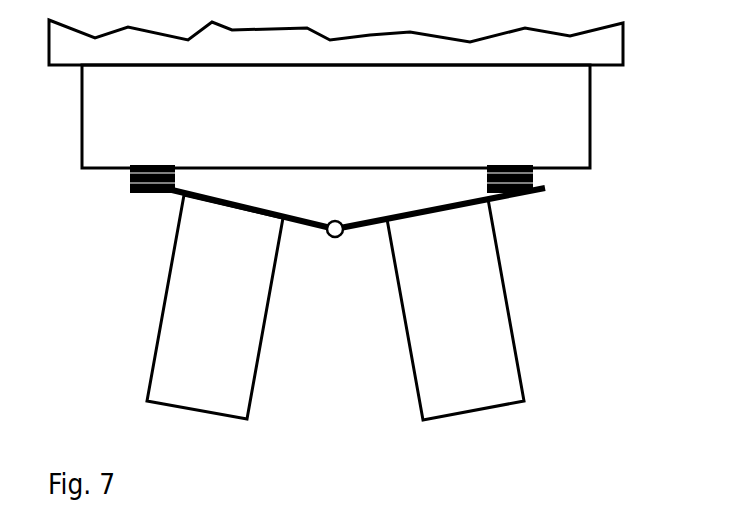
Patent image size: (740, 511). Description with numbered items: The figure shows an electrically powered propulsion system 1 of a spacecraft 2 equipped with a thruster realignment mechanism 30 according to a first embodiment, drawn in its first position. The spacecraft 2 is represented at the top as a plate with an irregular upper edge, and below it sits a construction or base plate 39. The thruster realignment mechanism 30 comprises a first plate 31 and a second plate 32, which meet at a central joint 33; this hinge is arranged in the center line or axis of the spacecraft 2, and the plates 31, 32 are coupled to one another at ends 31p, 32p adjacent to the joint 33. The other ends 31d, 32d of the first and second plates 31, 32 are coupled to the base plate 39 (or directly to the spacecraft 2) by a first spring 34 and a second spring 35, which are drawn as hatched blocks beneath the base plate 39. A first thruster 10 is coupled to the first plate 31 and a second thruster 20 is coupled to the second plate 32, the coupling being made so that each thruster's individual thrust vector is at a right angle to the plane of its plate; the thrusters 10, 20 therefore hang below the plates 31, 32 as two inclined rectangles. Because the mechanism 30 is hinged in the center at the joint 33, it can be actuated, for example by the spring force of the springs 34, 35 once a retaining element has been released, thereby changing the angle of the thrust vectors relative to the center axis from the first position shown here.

The electrically powered propulsion system 1 is at (99, 342).
The spacecraft 2 is at (623, 42).
The first thruster 10 is at (193, 410).
The second thruster 20 is at (492, 410).
The thruster realignment mechanism 30 is at (580, 183).
The first plate 31 is at (220, 231).
The adjacent end of first plate 31d is at (148, 196).
The far end of first plate 31p is at (316, 222).
The second plate 32 is at (446, 230).
The adjacent end of second plate 32d is at (514, 197).
The far end of second plate 32p is at (353, 222).
The joint 33 is at (335, 237).
The first spring 34 is at (130, 180).
The second spring 35 is at (535, 178).
The base plate 39 is at (590, 118).